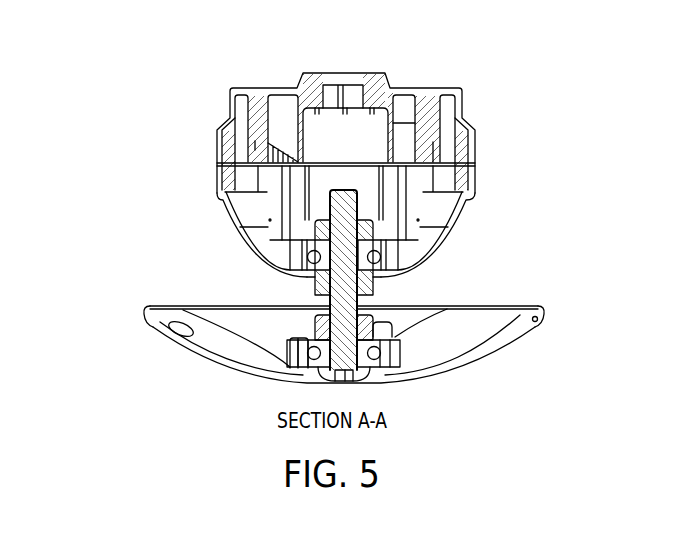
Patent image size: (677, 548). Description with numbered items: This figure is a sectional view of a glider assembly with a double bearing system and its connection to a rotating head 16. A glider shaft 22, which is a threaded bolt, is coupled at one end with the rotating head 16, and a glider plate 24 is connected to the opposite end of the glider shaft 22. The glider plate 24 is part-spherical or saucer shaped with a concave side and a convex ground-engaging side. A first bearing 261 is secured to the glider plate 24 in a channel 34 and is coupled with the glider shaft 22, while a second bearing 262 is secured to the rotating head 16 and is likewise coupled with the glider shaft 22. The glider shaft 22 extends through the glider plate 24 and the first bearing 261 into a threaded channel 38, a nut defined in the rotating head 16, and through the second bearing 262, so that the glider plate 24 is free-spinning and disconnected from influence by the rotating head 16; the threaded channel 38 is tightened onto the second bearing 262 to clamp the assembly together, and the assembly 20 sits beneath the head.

The rotating head 16 is at (483, 91).
The threaded channel 38 is at (367, 219).
The first bearing 261 is at (382, 248).
The base housing 20 is at (493, 286).
The glider shaft 22 is at (352, 302).
The glider plate 24 is at (538, 316).
The channel 34 is at (295, 337).
The second bearing 262 is at (393, 352).